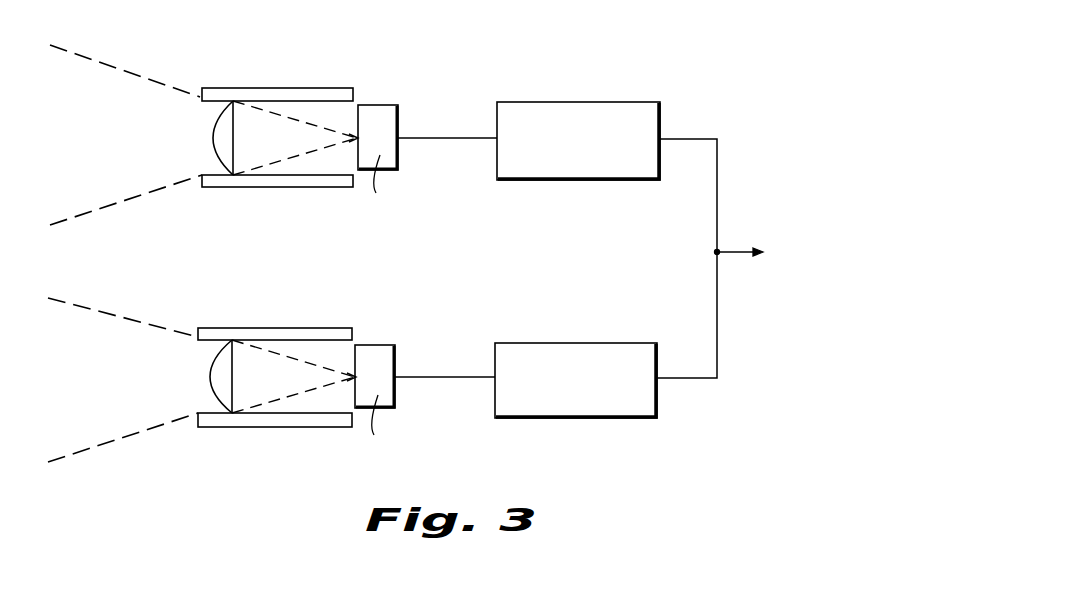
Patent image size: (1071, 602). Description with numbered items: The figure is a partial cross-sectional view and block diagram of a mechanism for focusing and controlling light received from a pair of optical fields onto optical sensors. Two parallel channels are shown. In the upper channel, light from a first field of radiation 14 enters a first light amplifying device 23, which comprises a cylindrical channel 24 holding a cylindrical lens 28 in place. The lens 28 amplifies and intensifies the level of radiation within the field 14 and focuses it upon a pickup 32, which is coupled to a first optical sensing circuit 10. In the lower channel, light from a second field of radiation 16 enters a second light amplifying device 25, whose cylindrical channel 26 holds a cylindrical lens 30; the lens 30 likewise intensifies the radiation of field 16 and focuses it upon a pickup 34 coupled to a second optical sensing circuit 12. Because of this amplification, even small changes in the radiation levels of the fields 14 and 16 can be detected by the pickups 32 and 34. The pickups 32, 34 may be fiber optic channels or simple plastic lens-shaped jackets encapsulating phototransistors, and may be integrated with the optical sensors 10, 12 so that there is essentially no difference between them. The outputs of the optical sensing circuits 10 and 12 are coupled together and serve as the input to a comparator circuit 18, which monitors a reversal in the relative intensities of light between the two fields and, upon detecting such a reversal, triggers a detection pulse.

The optical sensing circuit 10 is at (617, 102).
The optical sensing circuit 12 is at (619, 342).
The field of radiation 14 is at (107, 142).
The field of radiation 16 is at (101, 387).
The comparator circuit 18 is at (787, 258).
The first light amplifying device 23 is at (255, 126).
The cylindrical channel 24 is at (332, 88).
The second light amplifying device 25 is at (264, 370).
The cylindrical channel 26 is at (325, 328).
The cylindrical lens 28 is at (233, 142).
The cylindrical lens 30 is at (234, 380).
The pickup 32 is at (390, 105).
The pickup 34 is at (386, 345).